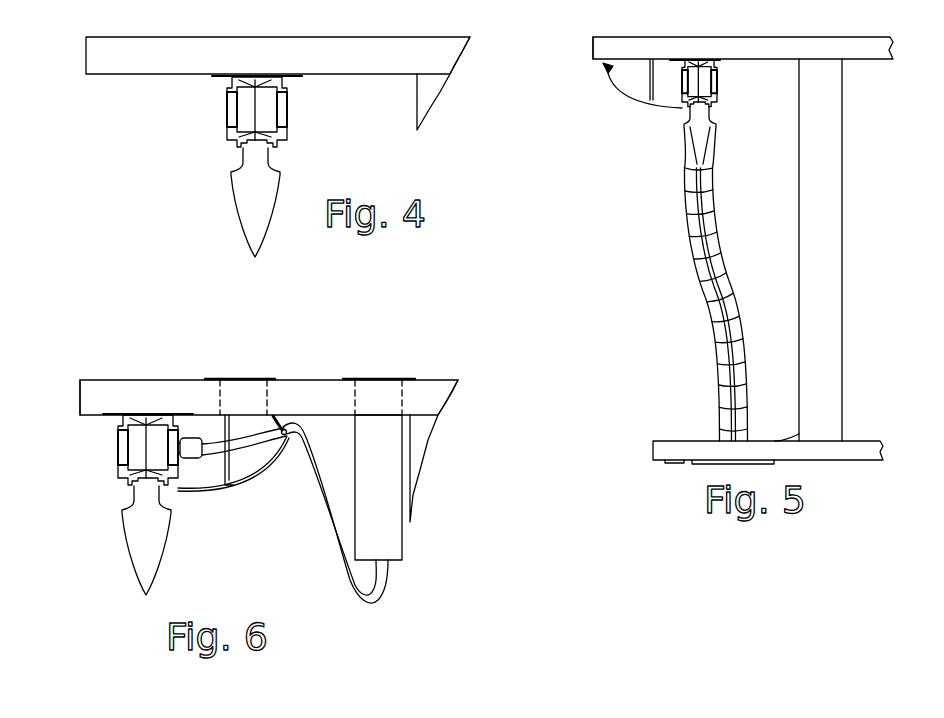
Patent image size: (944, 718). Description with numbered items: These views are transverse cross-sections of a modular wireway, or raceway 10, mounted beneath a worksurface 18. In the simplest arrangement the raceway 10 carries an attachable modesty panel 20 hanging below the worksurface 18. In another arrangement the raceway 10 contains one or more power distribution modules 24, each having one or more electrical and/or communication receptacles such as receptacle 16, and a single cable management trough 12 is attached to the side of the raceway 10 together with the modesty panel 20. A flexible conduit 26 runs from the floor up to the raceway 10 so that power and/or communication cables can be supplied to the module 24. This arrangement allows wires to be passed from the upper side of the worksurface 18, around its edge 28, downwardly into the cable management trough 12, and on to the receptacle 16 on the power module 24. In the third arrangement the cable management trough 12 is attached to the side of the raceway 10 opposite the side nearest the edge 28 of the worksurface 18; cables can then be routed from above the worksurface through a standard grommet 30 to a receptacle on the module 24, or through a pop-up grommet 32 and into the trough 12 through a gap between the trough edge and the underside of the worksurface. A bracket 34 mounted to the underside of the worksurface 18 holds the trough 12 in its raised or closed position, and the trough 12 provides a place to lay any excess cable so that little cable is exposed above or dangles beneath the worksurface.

In FIG. 4, the raceway 10 is at (257, 173).
In FIG. 6, the raceway 10 is at (174, 505).
In FIG. 5, the raceway 10 is at (729, 140).
In FIG. 5, the cable management trough 12 is at (630, 94).
In FIG. 4, the receptacle 16 is at (232, 112).
In FIG. 4, the worksurface 18 is at (388, 45).
In FIG. 6, the worksurface 18 is at (105, 388).
In FIG. 5, the worksurface 18 is at (591, 46).
In FIG. 4, the modesty panel 20 is at (275, 230).
In FIG. 6, the modesty panel 20 is at (168, 570).
In FIG. 5, the modesty panel 20 is at (704, 143).
In FIG. 4, the power distribution module 24 is at (280, 110).
In FIG. 5, the flexible conduit 26 is at (710, 289).
In FIG. 6, the edge of the worksurface 28 is at (79, 396).
In FIG. 6, the grommet 30 is at (255, 378).
In FIG. 6, the pop-up grommet 32 is at (395, 378).
In FIG. 6, the bracket 34 is at (269, 433).